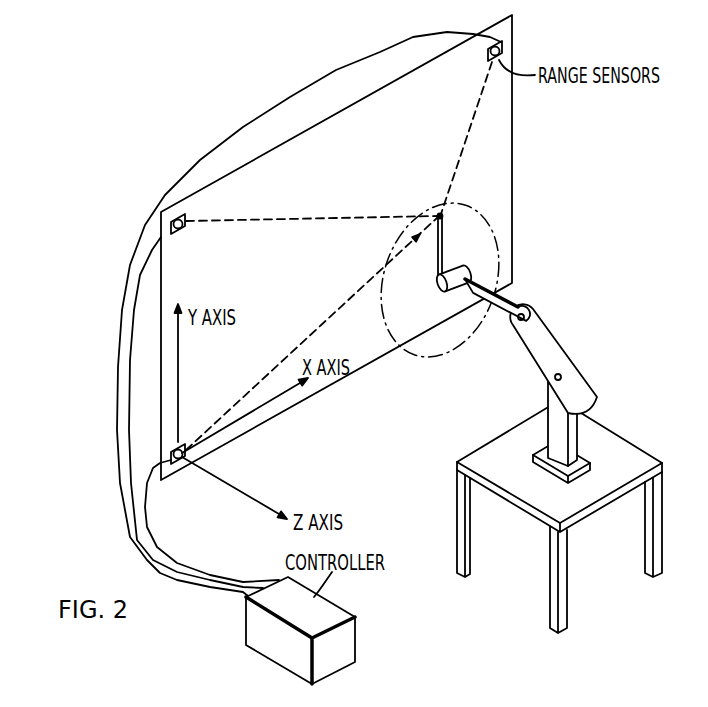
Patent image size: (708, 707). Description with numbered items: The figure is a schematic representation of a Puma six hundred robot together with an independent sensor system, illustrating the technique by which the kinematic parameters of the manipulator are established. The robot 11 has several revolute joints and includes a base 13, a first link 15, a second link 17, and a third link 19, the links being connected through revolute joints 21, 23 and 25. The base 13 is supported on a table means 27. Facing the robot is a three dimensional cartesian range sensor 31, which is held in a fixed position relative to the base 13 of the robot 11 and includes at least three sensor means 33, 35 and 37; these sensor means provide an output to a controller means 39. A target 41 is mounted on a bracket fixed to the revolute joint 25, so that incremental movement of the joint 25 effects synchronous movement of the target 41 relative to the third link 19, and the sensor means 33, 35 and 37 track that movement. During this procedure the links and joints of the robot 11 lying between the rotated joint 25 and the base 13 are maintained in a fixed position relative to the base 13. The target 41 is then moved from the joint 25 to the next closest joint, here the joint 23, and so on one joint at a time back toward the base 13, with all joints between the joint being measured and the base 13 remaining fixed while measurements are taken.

The robot 11 is at (531, 349).
The base 13 is at (538, 469).
The first link 15 is at (551, 430).
The second link 17 is at (547, 352).
The third link 19 is at (497, 308).
The revolute joint 21 is at (555, 379).
The revolute joint 23 is at (521, 327).
The revolute joint 25 is at (468, 277).
The table means 27 is at (553, 553).
The three dimensional cartesian range sensor 31 is at (303, 398).
The sensor means 33 is at (504, 44).
The sensor means 35 is at (186, 219).
The sensor means 37 is at (177, 473).
The controller means 39 is at (249, 630).
The target 41 is at (445, 222).